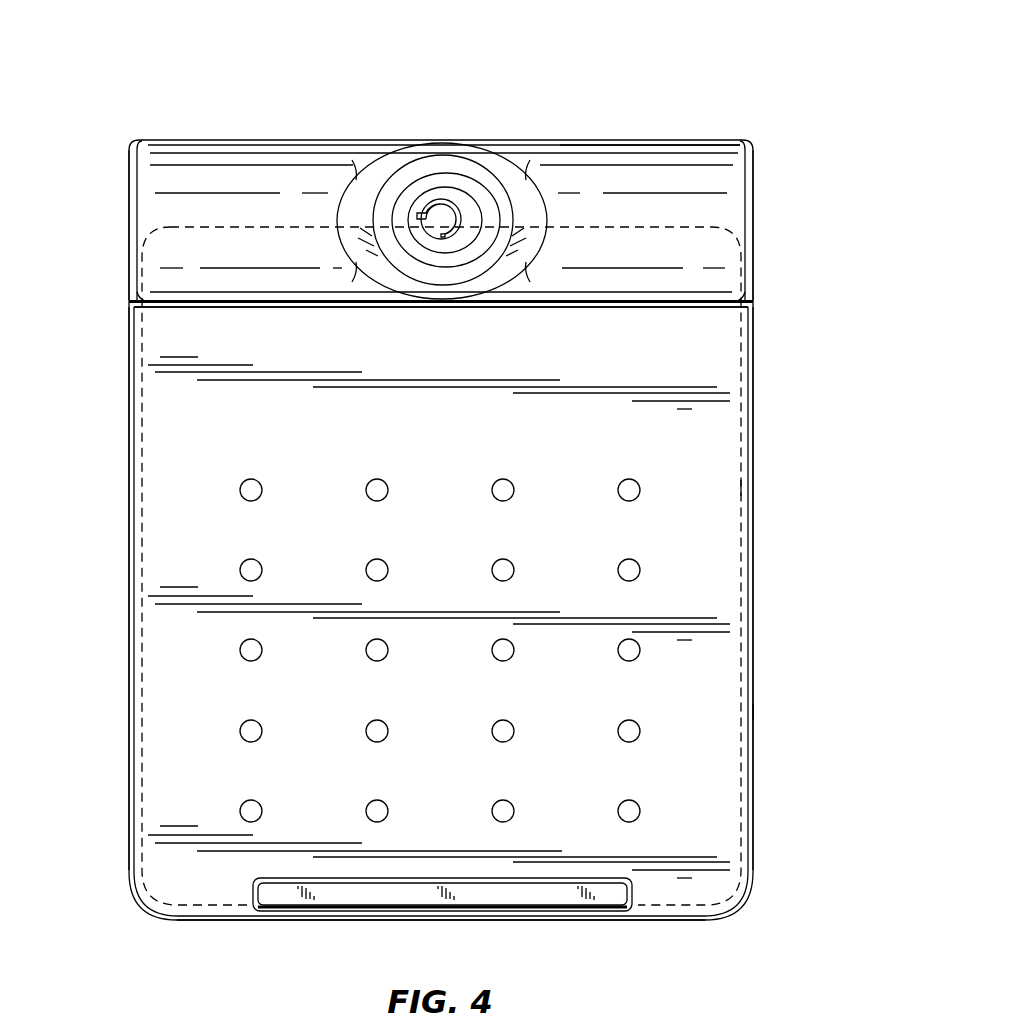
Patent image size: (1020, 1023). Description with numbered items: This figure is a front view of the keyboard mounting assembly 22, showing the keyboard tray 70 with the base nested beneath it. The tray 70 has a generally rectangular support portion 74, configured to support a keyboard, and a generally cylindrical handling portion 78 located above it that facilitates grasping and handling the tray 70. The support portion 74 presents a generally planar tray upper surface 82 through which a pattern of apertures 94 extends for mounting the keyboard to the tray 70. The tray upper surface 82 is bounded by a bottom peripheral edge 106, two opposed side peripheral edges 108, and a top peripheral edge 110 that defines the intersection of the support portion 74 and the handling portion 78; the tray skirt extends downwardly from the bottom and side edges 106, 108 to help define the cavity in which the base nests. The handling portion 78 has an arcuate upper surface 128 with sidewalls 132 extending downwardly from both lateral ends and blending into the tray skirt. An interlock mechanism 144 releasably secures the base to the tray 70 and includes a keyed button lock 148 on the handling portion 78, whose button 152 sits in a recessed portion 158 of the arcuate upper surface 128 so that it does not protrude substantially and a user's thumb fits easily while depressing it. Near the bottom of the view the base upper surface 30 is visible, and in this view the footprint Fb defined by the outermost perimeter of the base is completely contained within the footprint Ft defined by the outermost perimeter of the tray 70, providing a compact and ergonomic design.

The keyboard mounting assembly 22 is at (843, 128).
The base upper surface 30 is at (541, 893).
The keyboard tray 70 is at (130, 330).
The support portion 74 is at (180, 662).
The handling portion 78 is at (137, 143).
The tray upper surface 82 is at (190, 493).
The apertures 94 is at (245, 731).
The bottom peripheral edge 106 is at (650, 918).
The side peripheral edges 108 is at (130, 452).
The top peripheral edge 110 is at (683, 310).
The arcuate upper surface 128 is at (683, 158).
The sidewalls 132 is at (137, 212).
The interlock mechanism 144 is at (480, 125).
The lock 148 is at (445, 165).
The button 152 is at (413, 165).
The recessed portion 158 is at (515, 190).
The footprint of the base Fb is at (741, 488).
The footprint of the tray Ft is at (752, 712).